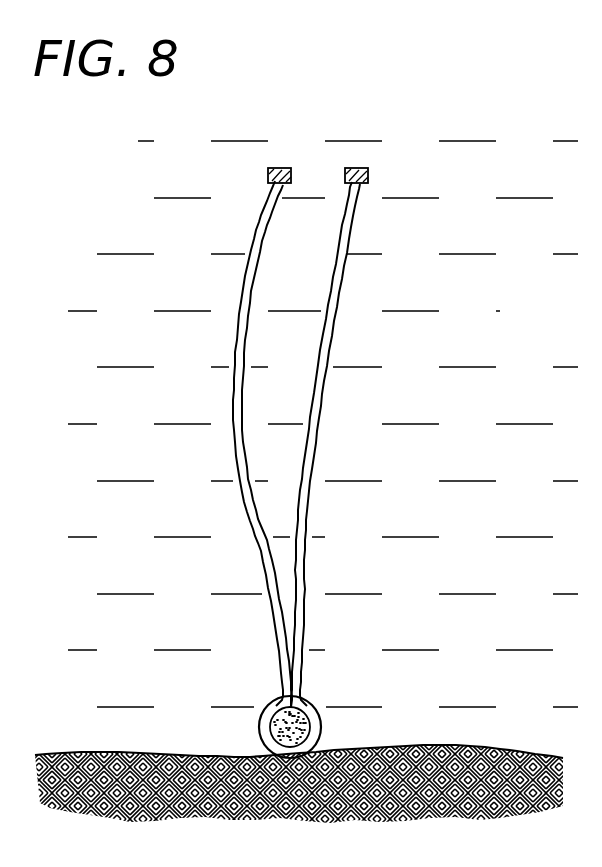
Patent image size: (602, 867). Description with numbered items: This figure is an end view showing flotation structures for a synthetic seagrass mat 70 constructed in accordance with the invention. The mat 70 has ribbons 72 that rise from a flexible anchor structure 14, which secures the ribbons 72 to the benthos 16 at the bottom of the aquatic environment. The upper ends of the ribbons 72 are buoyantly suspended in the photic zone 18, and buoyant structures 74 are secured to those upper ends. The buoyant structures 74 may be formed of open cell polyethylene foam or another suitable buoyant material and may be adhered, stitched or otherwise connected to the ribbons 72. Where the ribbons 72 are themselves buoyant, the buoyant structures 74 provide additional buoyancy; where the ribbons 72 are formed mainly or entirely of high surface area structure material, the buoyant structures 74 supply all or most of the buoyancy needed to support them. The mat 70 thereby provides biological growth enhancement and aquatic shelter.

The flexible anchor structure 14 is at (319, 708).
The benthos 16 is at (110, 752).
The photic zone 18 is at (143, 296).
The synthetic seagrass mat 70 is at (430, 219).
The ribbon 72 is at (261, 223).
The buoyant structure 74 is at (282, 167).